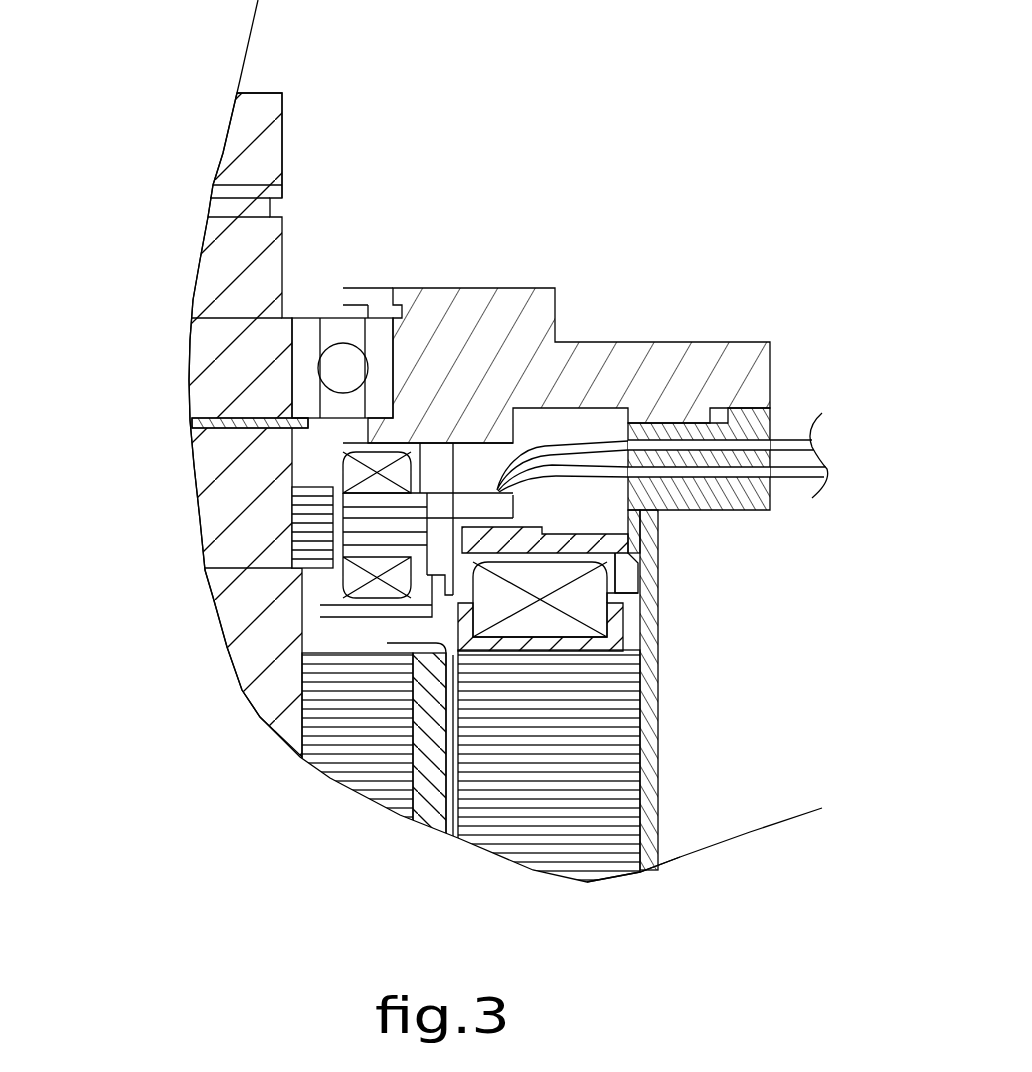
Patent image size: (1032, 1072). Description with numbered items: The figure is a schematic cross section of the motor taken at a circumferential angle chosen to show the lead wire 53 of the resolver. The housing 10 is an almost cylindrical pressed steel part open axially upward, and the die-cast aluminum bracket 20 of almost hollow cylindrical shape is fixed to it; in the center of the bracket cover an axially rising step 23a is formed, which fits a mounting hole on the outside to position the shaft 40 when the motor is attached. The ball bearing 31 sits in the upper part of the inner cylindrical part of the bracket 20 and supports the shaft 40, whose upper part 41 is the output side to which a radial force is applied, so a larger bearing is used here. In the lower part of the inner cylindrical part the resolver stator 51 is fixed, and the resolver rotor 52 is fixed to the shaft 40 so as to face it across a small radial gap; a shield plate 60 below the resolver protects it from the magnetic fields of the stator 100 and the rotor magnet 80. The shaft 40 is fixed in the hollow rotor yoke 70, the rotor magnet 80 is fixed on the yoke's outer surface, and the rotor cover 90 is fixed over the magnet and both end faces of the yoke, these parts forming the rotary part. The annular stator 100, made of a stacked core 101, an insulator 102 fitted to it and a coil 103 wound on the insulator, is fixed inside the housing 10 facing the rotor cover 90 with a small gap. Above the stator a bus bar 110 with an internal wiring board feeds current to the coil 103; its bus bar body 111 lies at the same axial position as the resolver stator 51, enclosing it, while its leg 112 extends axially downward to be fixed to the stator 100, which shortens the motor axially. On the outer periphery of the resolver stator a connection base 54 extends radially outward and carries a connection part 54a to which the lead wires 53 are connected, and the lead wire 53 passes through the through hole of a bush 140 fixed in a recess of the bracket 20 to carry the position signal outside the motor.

The housing 10 is at (660, 763).
The bracket 20 is at (428, 272).
The step 23a is at (440, 465).
The ball bearing 31 is at (319, 299).
The shaft 40 is at (247, 667).
The upper part of the shaft 41 is at (248, 152).
The resolver stator 51 is at (343, 576).
The resolver rotor 52 is at (290, 504).
The lead wire 53 is at (483, 502).
The connection base 54 is at (497, 490).
The connection part 54a is at (570, 443).
The shield plate 60 is at (355, 617).
The rotor yoke 70 is at (345, 755).
The rotor magnet 80 is at (430, 797).
The rotor cover 90 is at (455, 840).
The stator 100 is at (636, 689).
The stacked core 101 is at (643, 873).
The insulator 102 is at (470, 637).
The coil 103 is at (547, 617).
The bus bar 110 is at (575, 528).
The bus bar body 111 is at (527, 532).
The leg 112 is at (637, 623).
The bush 140 is at (728, 410).